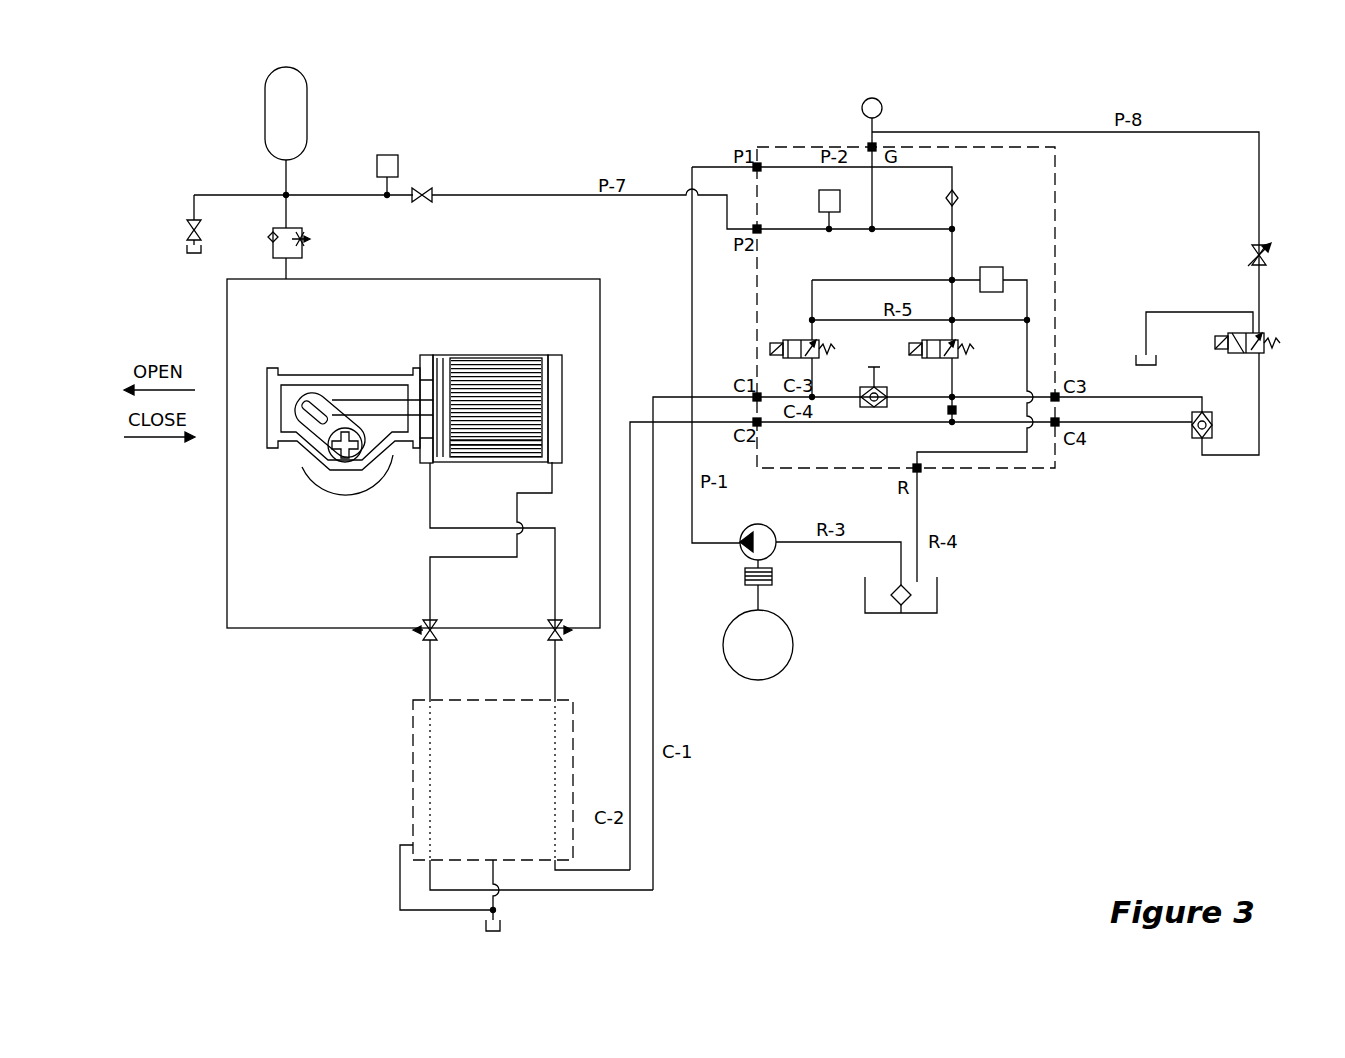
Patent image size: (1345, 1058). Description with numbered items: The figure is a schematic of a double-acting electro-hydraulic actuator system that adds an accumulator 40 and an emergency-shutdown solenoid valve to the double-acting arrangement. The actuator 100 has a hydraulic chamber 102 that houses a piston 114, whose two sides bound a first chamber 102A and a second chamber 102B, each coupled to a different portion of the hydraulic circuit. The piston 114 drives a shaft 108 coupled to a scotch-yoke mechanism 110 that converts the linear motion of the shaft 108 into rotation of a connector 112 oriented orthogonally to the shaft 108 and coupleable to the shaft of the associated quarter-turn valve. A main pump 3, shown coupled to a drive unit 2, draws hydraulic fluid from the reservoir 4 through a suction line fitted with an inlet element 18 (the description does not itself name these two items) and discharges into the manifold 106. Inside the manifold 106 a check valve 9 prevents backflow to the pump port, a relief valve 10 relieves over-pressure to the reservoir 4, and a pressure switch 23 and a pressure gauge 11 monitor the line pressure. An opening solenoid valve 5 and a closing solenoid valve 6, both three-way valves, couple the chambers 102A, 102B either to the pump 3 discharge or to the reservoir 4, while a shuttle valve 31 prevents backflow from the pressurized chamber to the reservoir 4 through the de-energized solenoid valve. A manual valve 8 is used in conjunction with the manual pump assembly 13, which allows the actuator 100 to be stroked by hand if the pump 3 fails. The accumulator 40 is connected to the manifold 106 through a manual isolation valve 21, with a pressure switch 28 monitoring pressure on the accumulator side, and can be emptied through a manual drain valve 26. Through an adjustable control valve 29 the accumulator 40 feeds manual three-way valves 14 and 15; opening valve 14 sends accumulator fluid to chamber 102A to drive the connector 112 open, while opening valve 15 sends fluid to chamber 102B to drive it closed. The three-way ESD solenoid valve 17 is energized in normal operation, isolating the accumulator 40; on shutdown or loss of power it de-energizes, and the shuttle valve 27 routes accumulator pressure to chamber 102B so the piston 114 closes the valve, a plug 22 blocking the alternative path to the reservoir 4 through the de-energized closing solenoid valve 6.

The accumulator 40 is at (299, 68).
The pressure switch 28 is at (376, 168).
The manual accumulator isolation valve 21 is at (426, 186).
The manual accumulator drain valve 26 is at (201, 233).
The control valve 29 is at (303, 232).
The hydraulic fluid reservoir 4 is at (966, 605).
The actuator 100 is at (350, 547).
The shaft 108 is at (380, 403).
The scotch-yoke mechanism 110 is at (318, 440).
The connector 112 is at (346, 448).
The hydraulic chamber 102 is at (502, 356).
The first chamber 102A is at (522, 447).
The second chamber 102B is at (421, 360).
The piston 114 is at (452, 378).
The manual three-way valve 14 is at (441, 631).
The manual three-way valve 15 is at (546, 632).
The manual pump assembly 13 is at (420, 700).
The manifold 106 is at (993, 468).
The pressure gauge 11 is at (878, 100).
The pressure switch 23 is at (818, 208).
The check valve 9 is at (957, 193).
The relief valve 10 is at (1003, 270).
The opening solenoid valve 5 is at (797, 340).
The closing solenoid valve 6 is at (958, 366).
The shuttle valve 31 is at (876, 366).
The plug 22 is at (956, 410).
The main pump 3 is at (762, 524).
The electric motor 2 is at (780, 615).
The suction strainer 18 is at (901, 613).
The manual valve 8 is at (1268, 258).
The ESD solenoid valve 17 is at (1279, 350).
The shuttle valve 27 is at (1192, 438).